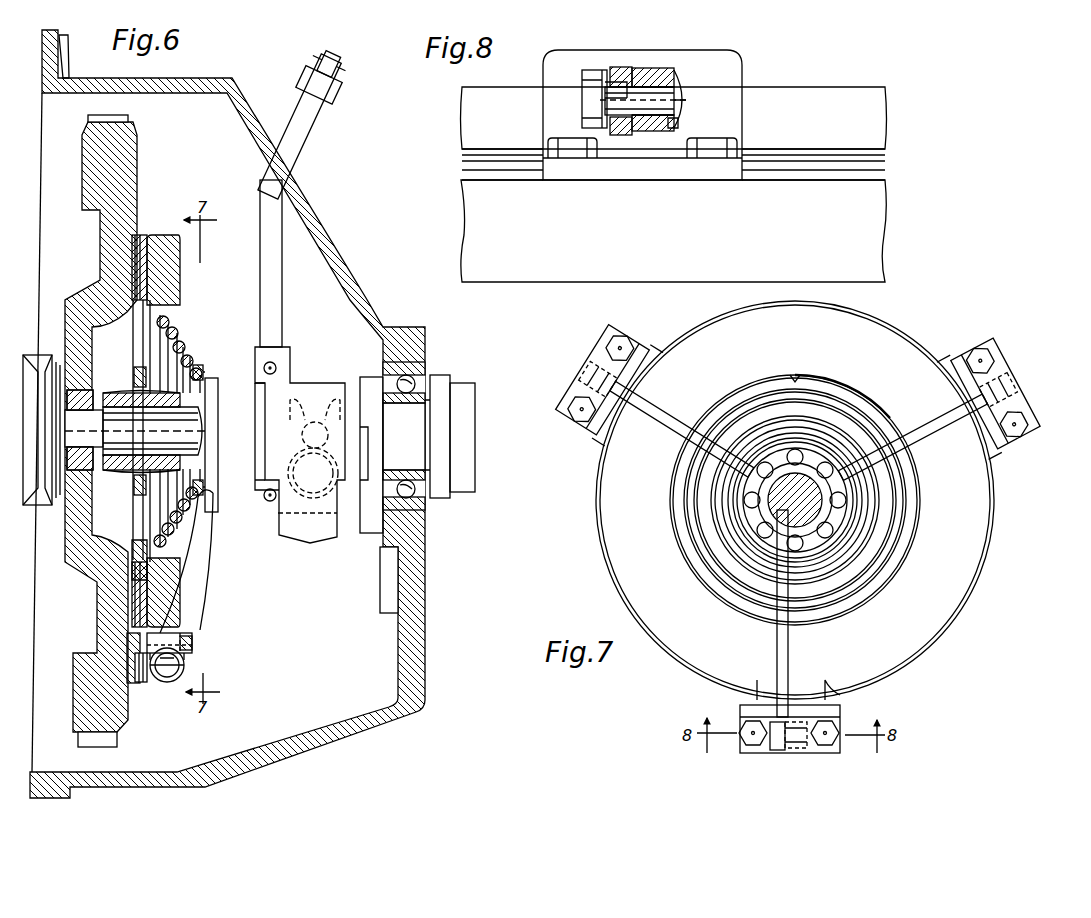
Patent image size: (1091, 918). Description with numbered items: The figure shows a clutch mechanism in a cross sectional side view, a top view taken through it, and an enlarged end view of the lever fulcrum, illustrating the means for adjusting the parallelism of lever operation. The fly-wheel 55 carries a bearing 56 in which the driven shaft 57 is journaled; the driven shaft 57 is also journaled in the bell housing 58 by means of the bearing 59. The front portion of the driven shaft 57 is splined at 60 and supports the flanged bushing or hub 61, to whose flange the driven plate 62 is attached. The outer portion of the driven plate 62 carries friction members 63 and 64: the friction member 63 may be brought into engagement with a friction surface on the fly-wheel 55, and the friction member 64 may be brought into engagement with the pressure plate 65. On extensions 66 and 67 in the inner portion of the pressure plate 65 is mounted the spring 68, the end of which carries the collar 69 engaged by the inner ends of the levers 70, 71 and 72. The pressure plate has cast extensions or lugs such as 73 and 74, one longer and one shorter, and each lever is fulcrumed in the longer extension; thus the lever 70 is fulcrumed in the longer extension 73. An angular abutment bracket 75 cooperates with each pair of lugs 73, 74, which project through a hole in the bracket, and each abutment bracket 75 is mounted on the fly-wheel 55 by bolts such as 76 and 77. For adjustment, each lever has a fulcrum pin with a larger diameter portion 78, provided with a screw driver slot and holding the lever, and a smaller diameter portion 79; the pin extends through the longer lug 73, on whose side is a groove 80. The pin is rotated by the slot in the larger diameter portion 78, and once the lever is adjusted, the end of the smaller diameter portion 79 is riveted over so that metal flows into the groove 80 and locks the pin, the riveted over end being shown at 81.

In FIG. 6, the fly-wheel 55 is at (83, 172).
In FIG. 8, the fly-wheel 55 is at (863, 200).
In FIG. 6, the bearing 56 is at (65, 462).
In FIG. 6, the driven shaft 57 is at (197, 413).
In FIG. 6, the bell housing 58 is at (337, 248).
In FIG. 6, the bearing 59 is at (433, 372).
In FIG. 6, the splined portion 60 is at (118, 431).
In FIG. 6, the bushing or hub 61 is at (103, 398).
In FIG. 6, the driven plate 62 is at (135, 240).
In FIG. 8, the driven plate 62 is at (462, 153).
In FIG. 6, the friction member 63 is at (139, 250).
In FIG. 8, the friction member 63 is at (465, 168).
In FIG. 6, the friction member 64 is at (141, 262).
In FIG. 8, the friction member 64 is at (877, 163).
In FIG. 6, the pressure plate 65 is at (150, 280).
In FIG. 8, the pressure plate 65 is at (837, 107).
In FIG. 7, the pressure plate 65 is at (965, 580).
In FIG. 6, the extension 66 is at (110, 565).
In FIG. 6, the extension 67 is at (92, 305).
In FIG. 7, the extension 67 is at (795, 378).
In FIG. 6, the spring 68 is at (165, 322).
In FIG. 7, the spring 68 is at (822, 410).
In FIG. 6, the collar 69 is at (183, 346).
In FIG. 7, the collar 69 is at (820, 553).
In FIG. 6, the lever 70 is at (203, 563).
In FIG. 8, the lever 70 is at (607, 67).
In FIG. 7, the lever 70 is at (780, 753).
In FIG. 7, the lever 71 is at (583, 358).
In FIG. 7, the lever 72 is at (1020, 390).
In FIG. 6, the longer extension or lug 73 is at (180, 602).
In FIG. 8, the longer extension or lug 73 is at (663, 132).
In FIG. 7, the longer extension or lug 73 is at (833, 700).
In FIG. 8, the shorter extension or lug 74 is at (597, 67).
In FIG. 7, the shorter extension or lug 74 is at (770, 692).
In FIG. 6, the abutment bracket 75 is at (193, 645).
In FIG. 8, the abutment bracket 75 is at (718, 93).
In FIG. 7, the abutment bracket 75 is at (750, 753).
In FIG. 8, the bolt 76 is at (573, 158).
In FIG. 7, the bolt 76 is at (747, 740).
In FIG. 6, the bolt 77 is at (147, 695).
In FIG. 8, the bolt 77 is at (713, 158).
In FIG. 7, the bolt 77 is at (838, 746).
In FIG. 6, the larger diameter portion 78 is at (186, 668).
In FIG. 8, the larger diameter portion 78 is at (623, 135).
In FIG. 8, the smaller diameter portion 79 is at (650, 90).
In FIG. 8, the groove 80 is at (677, 128).
In FIG. 7, the groove 80 is at (803, 730).
In FIG. 8, the riveted over end 81 is at (680, 97).
In FIG. 7, the riveted over end 81 is at (810, 740).